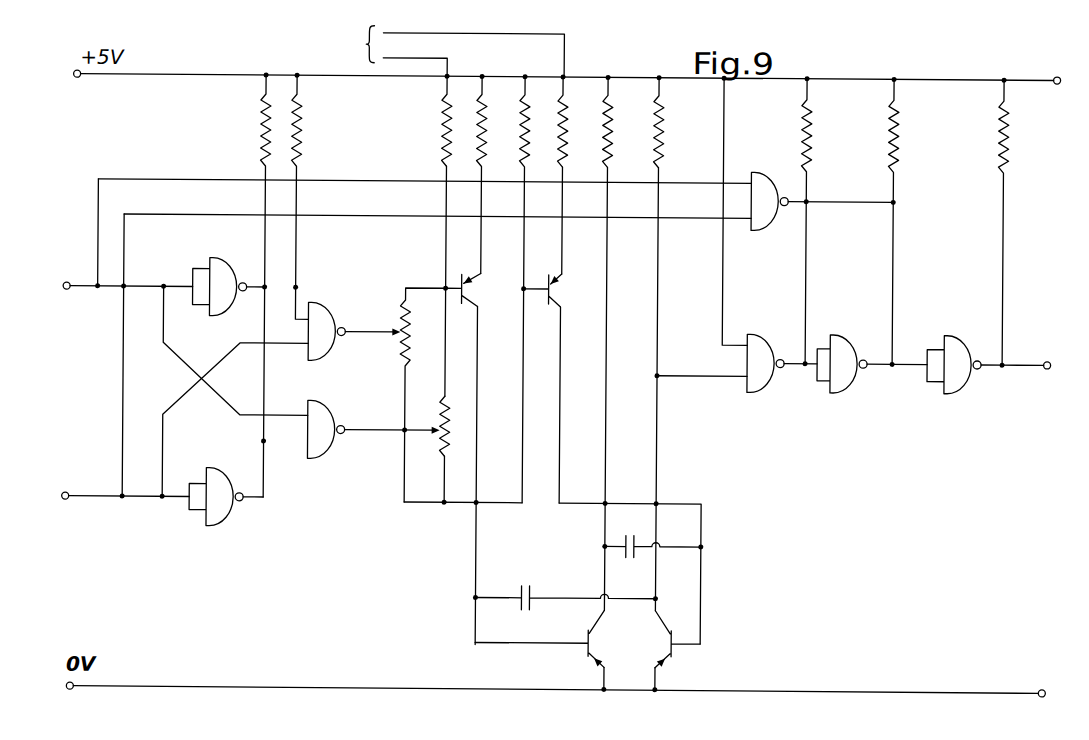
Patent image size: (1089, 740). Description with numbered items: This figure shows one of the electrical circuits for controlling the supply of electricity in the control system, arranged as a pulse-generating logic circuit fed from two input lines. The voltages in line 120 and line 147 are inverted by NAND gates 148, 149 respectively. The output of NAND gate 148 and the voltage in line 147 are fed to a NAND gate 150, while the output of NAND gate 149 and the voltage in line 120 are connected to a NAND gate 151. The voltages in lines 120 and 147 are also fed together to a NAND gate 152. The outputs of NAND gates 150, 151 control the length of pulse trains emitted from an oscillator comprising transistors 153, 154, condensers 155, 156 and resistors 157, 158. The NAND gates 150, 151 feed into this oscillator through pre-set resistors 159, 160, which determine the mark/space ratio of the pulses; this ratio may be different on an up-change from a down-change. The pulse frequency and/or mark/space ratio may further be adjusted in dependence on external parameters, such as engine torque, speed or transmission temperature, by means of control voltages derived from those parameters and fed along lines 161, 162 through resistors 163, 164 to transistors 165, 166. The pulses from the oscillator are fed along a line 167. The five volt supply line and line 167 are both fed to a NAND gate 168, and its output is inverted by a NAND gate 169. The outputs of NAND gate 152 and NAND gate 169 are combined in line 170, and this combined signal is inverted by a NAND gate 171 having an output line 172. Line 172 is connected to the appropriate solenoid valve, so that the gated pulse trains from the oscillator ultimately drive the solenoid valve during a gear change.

The line 120 is at (80, 291).
The line 147 is at (86, 494).
The NAND gate 148 is at (222, 262).
The NAND gate 149 is at (219, 517).
The NAND gate 150 is at (325, 307).
The NAND gate 151 is at (322, 462).
The NAND gate 152 is at (762, 237).
The transistor 153 is at (682, 657).
The transistor 154 is at (605, 637).
The condenser 155 is at (643, 529).
The condenser 156 is at (535, 590).
The resistor 157 is at (612, 131).
The resistor 158 is at (665, 132).
The pre-set resistor 159 is at (411, 321).
The pre-set resistor 160 is at (452, 414).
The line 161 is at (482, 33).
The line 162 is at (437, 60).
The resistor 163 is at (580, 122).
The resistor 164 is at (443, 131).
The transistor 165 is at (478, 292).
The transistor 166 is at (562, 293).
The line 167 is at (703, 377).
The NAND gate 168 is at (757, 384).
The NAND gate 169 is at (840, 389).
The line 170 is at (912, 378).
The NAND gate 171 is at (955, 390).
The output line 172 is at (1027, 366).